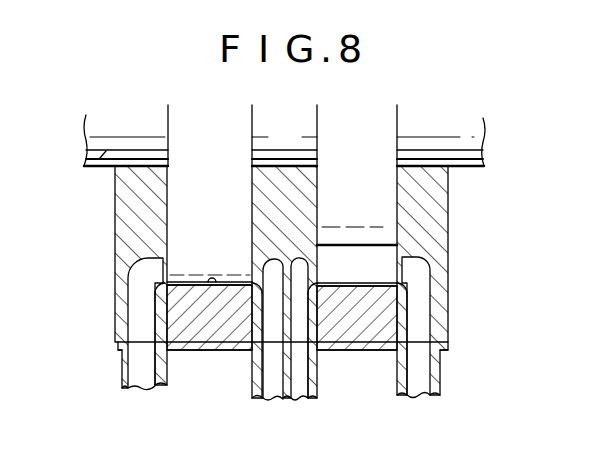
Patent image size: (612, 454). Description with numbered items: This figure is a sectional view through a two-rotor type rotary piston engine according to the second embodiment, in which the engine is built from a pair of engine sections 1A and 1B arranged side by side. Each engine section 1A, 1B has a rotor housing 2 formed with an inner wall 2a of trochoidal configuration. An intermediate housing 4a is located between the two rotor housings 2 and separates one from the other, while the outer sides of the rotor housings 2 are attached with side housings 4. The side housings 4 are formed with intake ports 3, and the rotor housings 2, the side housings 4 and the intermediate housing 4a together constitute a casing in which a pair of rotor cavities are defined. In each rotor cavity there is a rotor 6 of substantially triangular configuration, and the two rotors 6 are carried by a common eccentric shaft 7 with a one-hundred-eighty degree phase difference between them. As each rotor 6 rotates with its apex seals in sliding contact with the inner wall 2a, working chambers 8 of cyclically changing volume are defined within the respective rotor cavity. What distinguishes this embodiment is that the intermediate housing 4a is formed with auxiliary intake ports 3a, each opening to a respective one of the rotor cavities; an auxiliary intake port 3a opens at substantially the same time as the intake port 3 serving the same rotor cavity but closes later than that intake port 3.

The engine section 1A is at (231, 404).
The engine section 1B is at (327, 397).
The rotor housing 2 is at (184, 355).
The inner wall 2a is at (221, 352).
The intake port 3 is at (150, 273).
The auxiliary intake port 3a is at (264, 270).
The side housing 4 is at (132, 244).
The intermediate housing 4a is at (277, 185).
The rotor 6 is at (192, 213).
The eccentric shaft 7 is at (99, 169).
The working chamber 8 is at (398, 302).